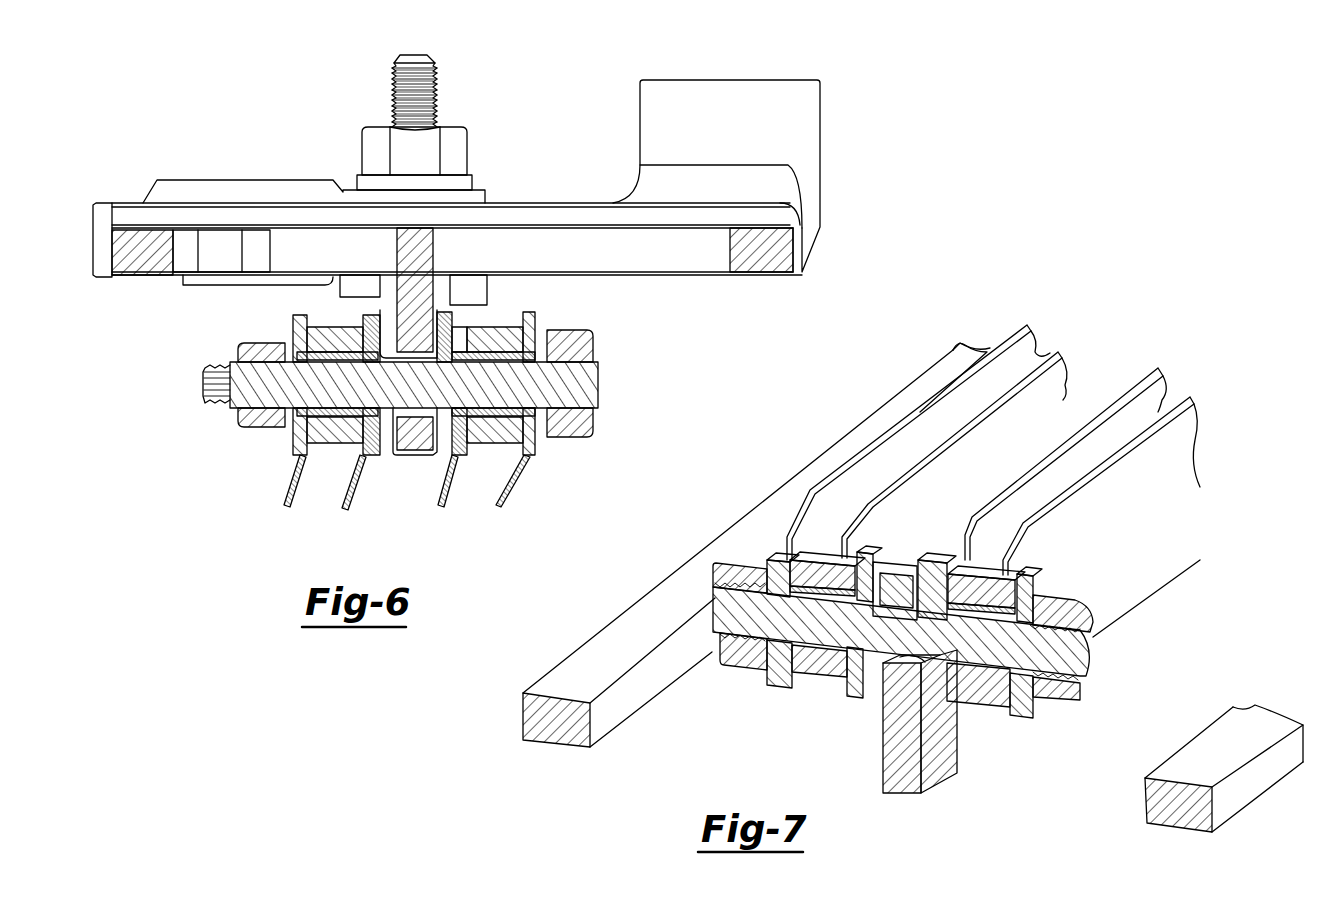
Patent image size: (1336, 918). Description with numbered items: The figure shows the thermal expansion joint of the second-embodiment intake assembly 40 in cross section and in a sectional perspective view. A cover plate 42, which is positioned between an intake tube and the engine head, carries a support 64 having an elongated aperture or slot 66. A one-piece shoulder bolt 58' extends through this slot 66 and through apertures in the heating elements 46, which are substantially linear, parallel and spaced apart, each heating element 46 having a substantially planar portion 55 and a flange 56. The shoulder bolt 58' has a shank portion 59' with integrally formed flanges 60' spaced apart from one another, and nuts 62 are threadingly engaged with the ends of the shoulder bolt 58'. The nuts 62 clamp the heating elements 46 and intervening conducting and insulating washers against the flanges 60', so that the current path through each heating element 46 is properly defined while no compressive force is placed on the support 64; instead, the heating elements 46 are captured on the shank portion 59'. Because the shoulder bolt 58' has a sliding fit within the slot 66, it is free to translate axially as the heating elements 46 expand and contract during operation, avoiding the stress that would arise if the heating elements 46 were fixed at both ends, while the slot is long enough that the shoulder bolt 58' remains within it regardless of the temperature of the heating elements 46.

In FIG. 6, the intake assembly 40 is at (522, 58).
In FIG. 6, the cover plate 42 is at (130, 215).
In FIG. 7, the cover plate 42 is at (635, 700).
In FIG. 6, the heating elements 46 is at (284, 465).
In FIG. 7, the heating elements 46 is at (1042, 399).
In FIG. 6, the substantially planar portion 55 is at (525, 432).
In FIG. 7, the substantially planar portion 55 is at (1215, 580).
In FIG. 6, the flange 56 is at (282, 500).
In FIG. 7, the flange 56 is at (967, 440).
In FIG. 6, the one-piece shoulder bolt 58' is at (186, 443).
In FIG. 7, the one-piece shoulder bolt 58' is at (1139, 678).
In FIG. 6, the shank portion 59' is at (432, 387).
In FIG. 7, the shank portion 59' is at (901, 661).
In FIG. 6, the integrally formed flanges 60' is at (415, 416).
In FIG. 7, the integrally formed flanges 60' is at (861, 633).
In FIG. 6, the nuts 62 is at (250, 345).
In FIG. 7, the nuts 62 is at (740, 650).
In FIG. 6, the support 64 is at (405, 266).
In FIG. 7, the support 64 is at (915, 778).
In FIG. 6, the elongated aperture or slot 66 is at (413, 352).
In FIG. 7, the elongated aperture or slot 66 is at (908, 660).